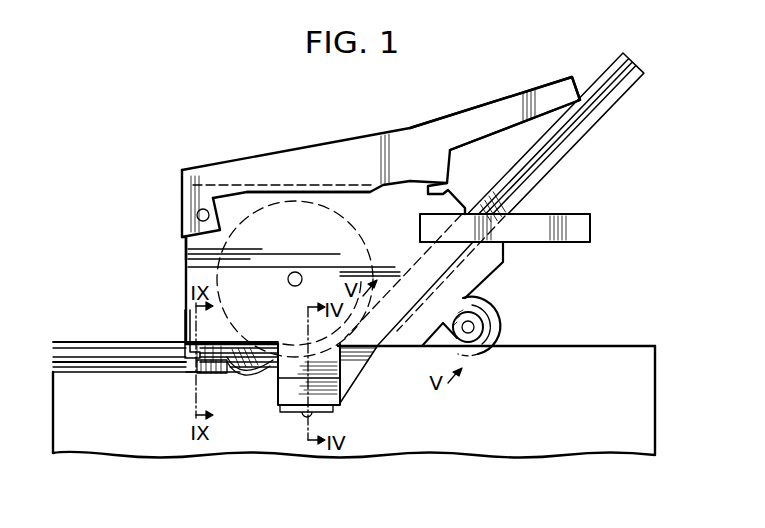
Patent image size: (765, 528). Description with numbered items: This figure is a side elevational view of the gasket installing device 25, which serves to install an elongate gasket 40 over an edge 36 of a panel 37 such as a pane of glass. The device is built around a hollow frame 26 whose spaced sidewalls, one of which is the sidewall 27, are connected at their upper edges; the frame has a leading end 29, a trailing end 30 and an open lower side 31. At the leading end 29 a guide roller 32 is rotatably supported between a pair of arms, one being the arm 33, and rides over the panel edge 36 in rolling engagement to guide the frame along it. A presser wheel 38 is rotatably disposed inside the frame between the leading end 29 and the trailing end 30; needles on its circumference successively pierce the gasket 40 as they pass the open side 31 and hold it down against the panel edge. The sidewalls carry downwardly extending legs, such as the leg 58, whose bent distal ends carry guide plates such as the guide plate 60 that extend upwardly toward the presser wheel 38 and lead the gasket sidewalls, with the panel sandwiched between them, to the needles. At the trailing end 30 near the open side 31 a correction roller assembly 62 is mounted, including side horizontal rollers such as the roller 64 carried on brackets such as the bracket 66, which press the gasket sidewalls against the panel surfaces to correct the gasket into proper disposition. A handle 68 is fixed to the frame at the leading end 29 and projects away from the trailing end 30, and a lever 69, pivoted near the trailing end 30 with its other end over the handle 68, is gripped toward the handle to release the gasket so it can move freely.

The gasket installing device 25 is at (200, 162).
The hollow frame 26 is at (186, 248).
The sidewall 27 is at (241, 207).
The leading end 29 is at (488, 270).
The trailing end 30 is at (188, 266).
The open lower side 31 is at (238, 345).
The guide roller 32 is at (498, 332).
The arm 33 is at (496, 313).
The edge 36 is at (588, 346).
The panel 37 is at (557, 448).
The presser wheel 38 is at (361, 251).
The gasket 40 is at (594, 106).
The leg 58 is at (341, 402).
The guide plate 60 is at (363, 363).
The correction roller assembly 62 is at (180, 375).
The side horizontal roller 64 is at (209, 374).
The bracket 66 is at (184, 338).
The handle 68 is at (580, 229).
The lever 69 is at (369, 147).